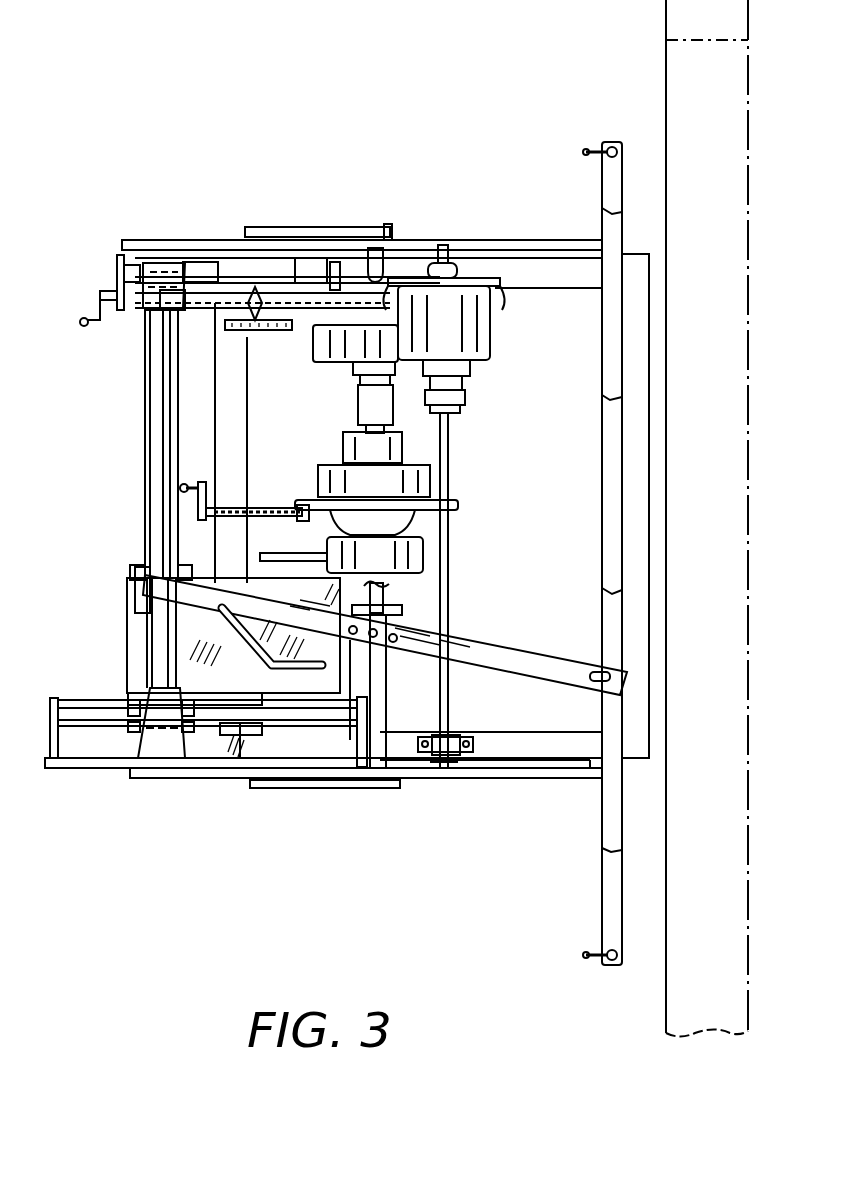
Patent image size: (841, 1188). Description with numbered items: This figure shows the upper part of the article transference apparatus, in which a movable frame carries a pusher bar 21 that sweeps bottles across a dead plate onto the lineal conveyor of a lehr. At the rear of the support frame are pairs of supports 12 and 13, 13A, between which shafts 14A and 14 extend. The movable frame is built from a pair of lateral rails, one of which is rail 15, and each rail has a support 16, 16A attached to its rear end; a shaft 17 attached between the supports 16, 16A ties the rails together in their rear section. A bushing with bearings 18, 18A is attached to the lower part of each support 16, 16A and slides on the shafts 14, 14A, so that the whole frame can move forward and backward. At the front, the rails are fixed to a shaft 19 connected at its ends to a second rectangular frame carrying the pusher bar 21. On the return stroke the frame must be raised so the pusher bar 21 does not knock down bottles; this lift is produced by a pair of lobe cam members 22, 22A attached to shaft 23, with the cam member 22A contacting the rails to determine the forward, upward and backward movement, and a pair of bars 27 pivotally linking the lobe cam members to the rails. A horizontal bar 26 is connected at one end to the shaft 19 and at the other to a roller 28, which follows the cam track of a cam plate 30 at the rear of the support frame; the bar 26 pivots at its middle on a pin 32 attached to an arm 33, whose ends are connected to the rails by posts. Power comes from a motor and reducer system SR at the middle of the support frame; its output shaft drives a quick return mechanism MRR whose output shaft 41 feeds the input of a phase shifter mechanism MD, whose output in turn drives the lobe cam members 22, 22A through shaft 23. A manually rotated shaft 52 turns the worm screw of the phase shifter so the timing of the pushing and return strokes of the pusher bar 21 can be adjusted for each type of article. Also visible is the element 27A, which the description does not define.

The support 12 is at (300, 768).
The support 13 is at (343, 277).
The support 13A is at (118, 272).
The shaft 14 is at (257, 285).
The shaft 14A is at (242, 736).
The lateral rail 15 is at (535, 248).
The support 16 is at (150, 752).
The support 16A is at (170, 293).
The shaft 17 is at (160, 400).
The bushing with bearings 18 is at (125, 730).
The bushing with bearings 18A is at (150, 262).
The shaft 19 is at (616, 633).
The pusher bar 21 is at (650, 752).
The lobe cam member 22 is at (435, 782).
The lobe cam member 22A is at (457, 243).
The shaft 23 is at (450, 473).
The horizontal bar 26 is at (426, 648).
The bar 27 is at (362, 780).
The top bar 27A is at (323, 228).
The roller 28 is at (150, 581).
The cam plate 30 is at (200, 636).
The pin 32 is at (395, 620).
The arm 33 is at (355, 745).
The output shaft 41 is at (357, 383).
The shaft 52 is at (116, 300).
The phase shifter mechanism MD is at (335, 346).
The quick return mechanism MRR is at (345, 484).
The reducer system SR is at (425, 556).